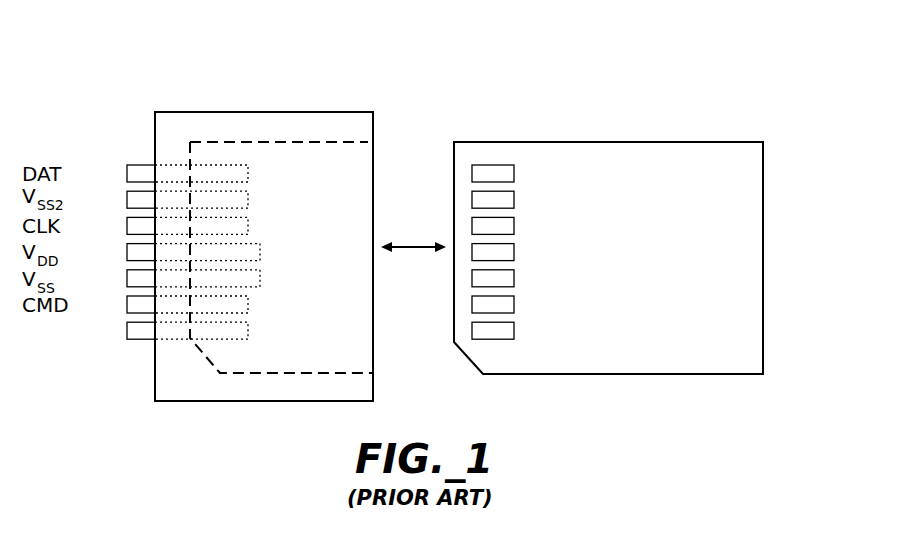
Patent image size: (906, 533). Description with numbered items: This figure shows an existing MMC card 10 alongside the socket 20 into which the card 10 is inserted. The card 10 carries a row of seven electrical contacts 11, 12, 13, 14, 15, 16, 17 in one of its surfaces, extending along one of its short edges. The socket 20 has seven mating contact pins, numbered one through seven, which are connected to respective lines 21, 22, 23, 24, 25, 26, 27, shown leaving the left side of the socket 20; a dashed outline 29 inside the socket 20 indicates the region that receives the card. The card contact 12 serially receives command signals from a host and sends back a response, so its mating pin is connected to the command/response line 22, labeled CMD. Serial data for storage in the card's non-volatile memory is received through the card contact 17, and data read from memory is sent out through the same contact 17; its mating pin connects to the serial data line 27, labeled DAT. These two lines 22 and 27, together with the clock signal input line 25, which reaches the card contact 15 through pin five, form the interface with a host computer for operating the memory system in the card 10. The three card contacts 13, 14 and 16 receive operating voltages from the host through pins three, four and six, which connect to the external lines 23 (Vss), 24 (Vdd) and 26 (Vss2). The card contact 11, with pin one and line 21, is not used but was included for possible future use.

The MMC card 10 is at (669, 110).
The card contact 11 is at (514, 332).
The card contact 12 is at (514, 306).
The card contact 13 is at (514, 280).
The card contact 14 is at (514, 254).
The card contact 15 is at (514, 227).
The card contact 16 is at (514, 201).
The card contact 17 is at (514, 175).
The socket 20 is at (220, 84).
The line 21 is at (127, 330).
The command/response (CMD) line 22 is at (127, 304).
The Vss line 23 is at (127, 278).
The Vdd line 24 is at (127, 252).
The clock signal input line 25 is at (127, 225).
The Vss2 line 26 is at (127, 199).
The serial data (DAT) line 27 is at (127, 173).
The card receiving region outline 29 is at (350, 203).